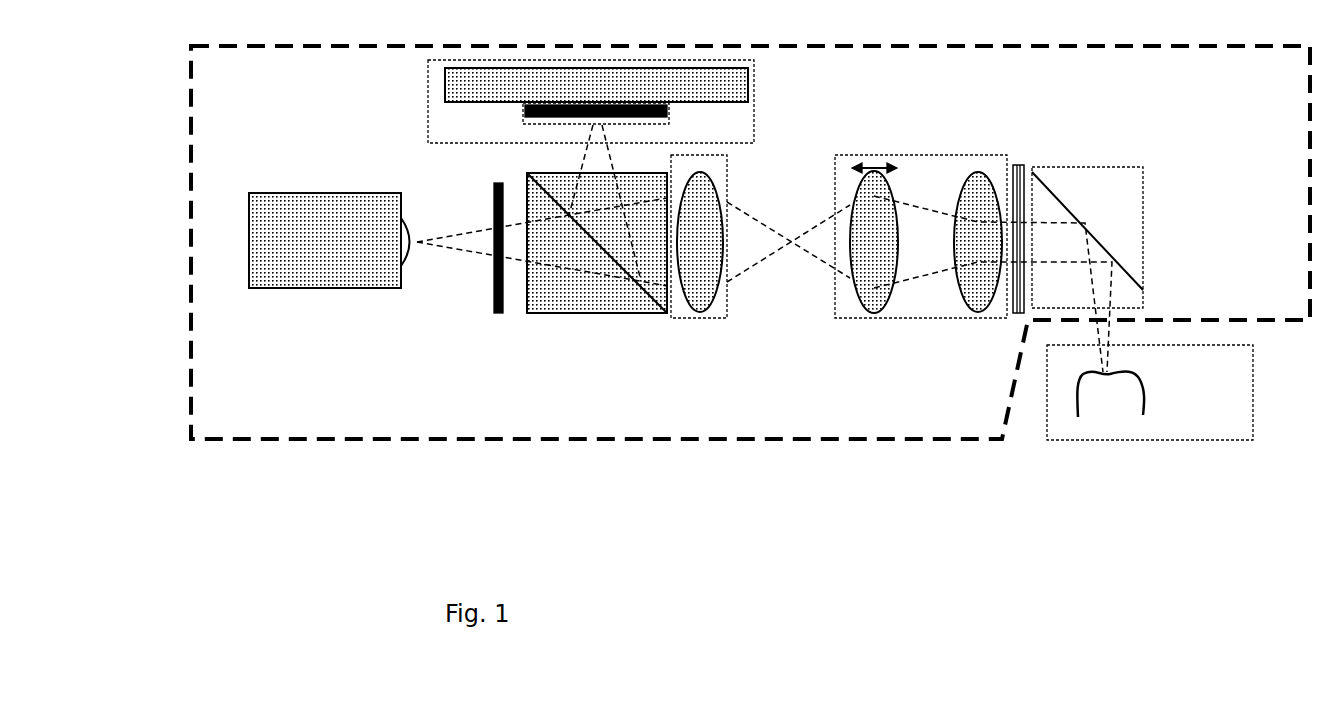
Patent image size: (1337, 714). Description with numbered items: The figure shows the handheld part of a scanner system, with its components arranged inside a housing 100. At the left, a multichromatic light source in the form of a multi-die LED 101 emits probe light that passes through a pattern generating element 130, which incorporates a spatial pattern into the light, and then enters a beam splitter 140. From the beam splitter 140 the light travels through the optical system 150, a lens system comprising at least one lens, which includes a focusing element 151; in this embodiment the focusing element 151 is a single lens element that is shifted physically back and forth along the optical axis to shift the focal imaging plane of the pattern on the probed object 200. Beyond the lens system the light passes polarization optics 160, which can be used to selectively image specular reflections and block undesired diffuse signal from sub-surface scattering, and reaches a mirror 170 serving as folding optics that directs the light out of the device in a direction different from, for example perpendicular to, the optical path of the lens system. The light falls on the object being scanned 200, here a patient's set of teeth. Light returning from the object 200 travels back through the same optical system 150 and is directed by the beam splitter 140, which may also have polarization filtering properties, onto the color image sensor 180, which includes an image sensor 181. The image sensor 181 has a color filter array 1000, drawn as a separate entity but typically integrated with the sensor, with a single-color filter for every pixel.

The housing 100 is at (605, 443).
The multi-die LED 101 is at (329, 268).
The pattern generating element 130 is at (498, 315).
The beam splitter 140 is at (598, 313).
The optical system 150 is at (875, 157).
The focusing element 151 is at (874, 318).
The polarization optics 160 is at (1020, 163).
The mirror 170 is at (1085, 165).
The color image sensor 180 is at (430, 100).
The image sensor 181 is at (667, 115).
The color filter array 1000 is at (525, 115).
The object being scanned 200 is at (1140, 440).